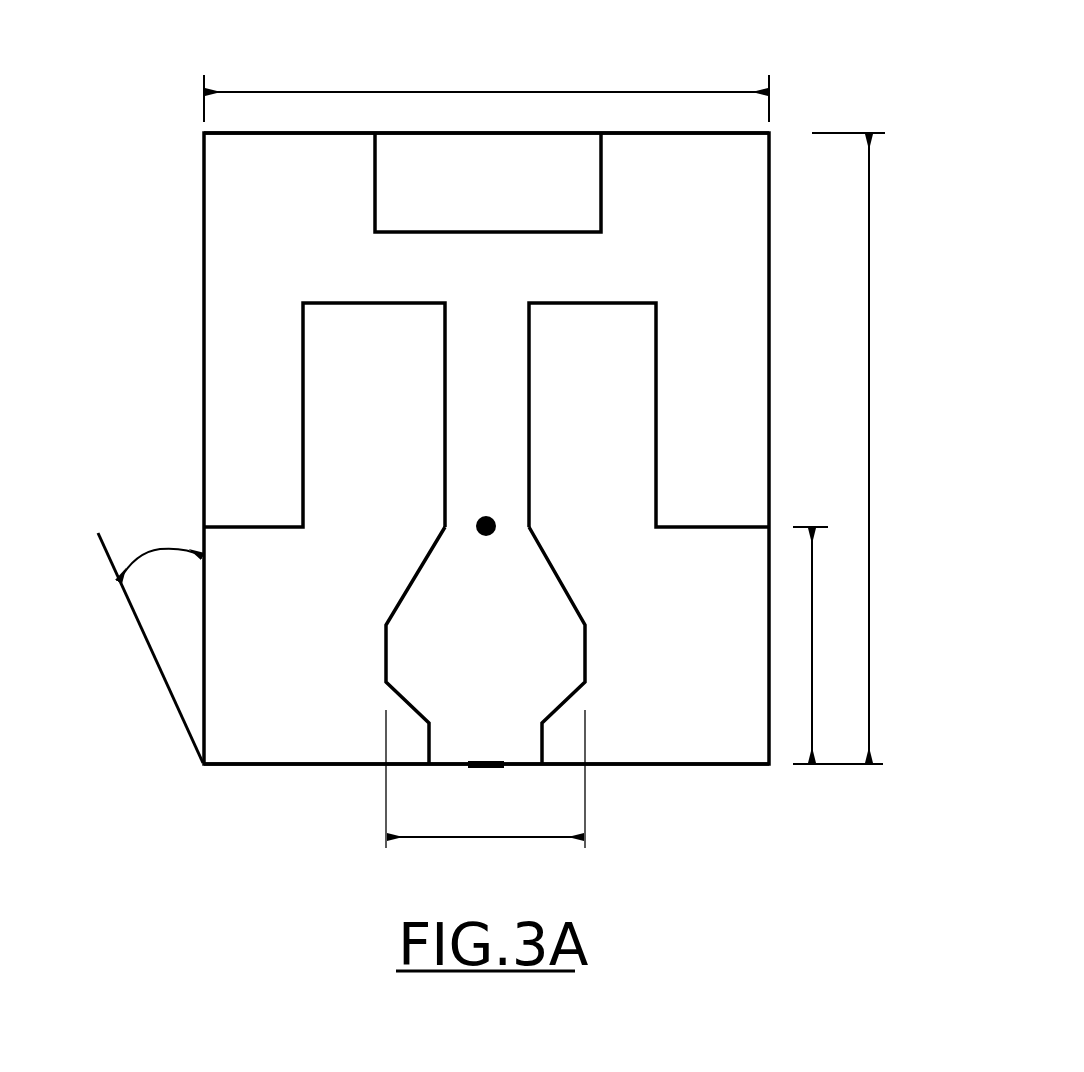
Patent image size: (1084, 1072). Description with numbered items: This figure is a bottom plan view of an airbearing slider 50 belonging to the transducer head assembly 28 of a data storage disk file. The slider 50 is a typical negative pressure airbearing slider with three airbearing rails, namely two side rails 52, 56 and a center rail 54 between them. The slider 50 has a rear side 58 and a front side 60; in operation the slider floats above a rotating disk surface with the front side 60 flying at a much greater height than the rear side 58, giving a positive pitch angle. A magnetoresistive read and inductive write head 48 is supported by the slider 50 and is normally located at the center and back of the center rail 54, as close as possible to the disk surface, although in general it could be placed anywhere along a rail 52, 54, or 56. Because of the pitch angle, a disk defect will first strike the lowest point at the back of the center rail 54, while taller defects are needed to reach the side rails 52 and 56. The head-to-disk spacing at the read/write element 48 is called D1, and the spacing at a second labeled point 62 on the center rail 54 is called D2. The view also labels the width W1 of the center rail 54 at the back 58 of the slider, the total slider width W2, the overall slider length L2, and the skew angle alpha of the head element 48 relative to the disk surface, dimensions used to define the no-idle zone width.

The transducer head assembly 28 is at (353, 38).
The magnetoresistive read and inductive write head 48 is at (486, 768).
The airbearing slider 50 is at (240, 369).
The airbearing rail 52 is at (324, 415).
The center rail 54 is at (485, 594).
The airbearing rail 56 is at (649, 415).
The rear side 58 is at (316, 764).
The front side 60 is at (290, 131).
The point on the center rail 62 is at (486, 536).